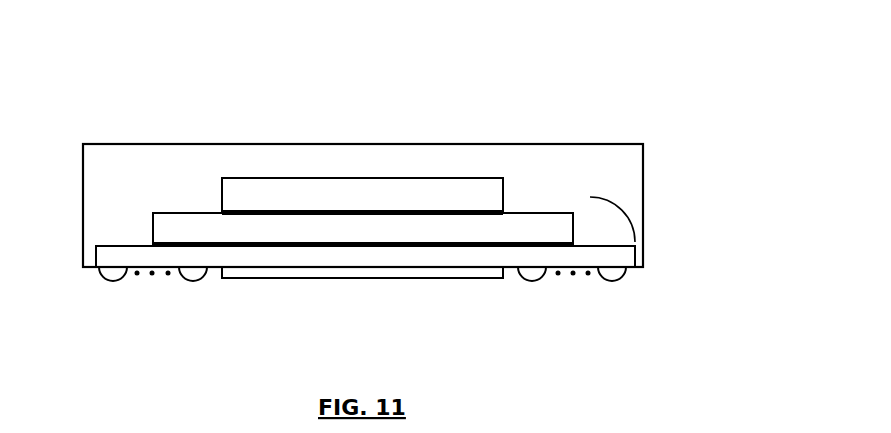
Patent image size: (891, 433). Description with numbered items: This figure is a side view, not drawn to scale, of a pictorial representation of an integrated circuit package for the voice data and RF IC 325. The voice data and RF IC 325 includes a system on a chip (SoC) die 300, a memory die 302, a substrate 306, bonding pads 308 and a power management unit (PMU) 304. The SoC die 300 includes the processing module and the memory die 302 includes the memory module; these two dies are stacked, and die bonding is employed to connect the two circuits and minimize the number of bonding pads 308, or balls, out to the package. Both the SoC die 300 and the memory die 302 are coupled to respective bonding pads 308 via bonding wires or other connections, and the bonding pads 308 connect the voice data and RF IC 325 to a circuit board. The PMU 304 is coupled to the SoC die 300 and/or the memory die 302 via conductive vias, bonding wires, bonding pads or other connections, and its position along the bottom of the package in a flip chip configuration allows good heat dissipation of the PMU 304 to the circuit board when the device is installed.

The system on a chip (SoC) die 300 is at (362, 196).
The memory die 302 is at (363, 230).
The power management unit (PMU) 304 is at (345, 278).
The substrate 306 is at (590, 210).
The bonding pads 308 is at (161, 297).
The voice data and RF IC 325 is at (607, 118).